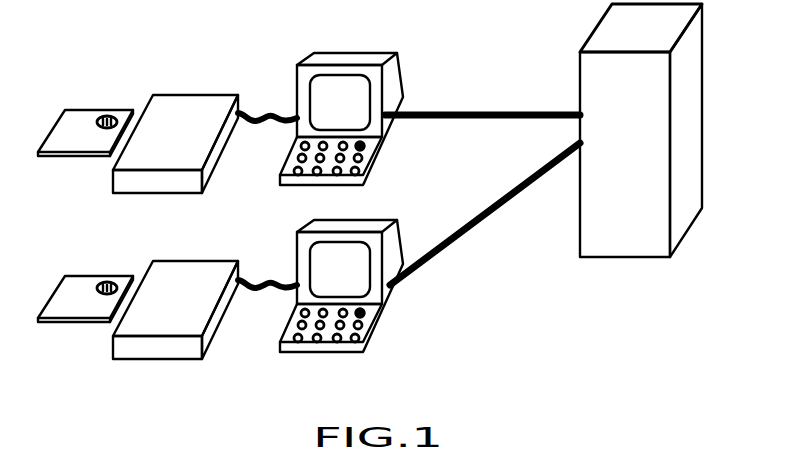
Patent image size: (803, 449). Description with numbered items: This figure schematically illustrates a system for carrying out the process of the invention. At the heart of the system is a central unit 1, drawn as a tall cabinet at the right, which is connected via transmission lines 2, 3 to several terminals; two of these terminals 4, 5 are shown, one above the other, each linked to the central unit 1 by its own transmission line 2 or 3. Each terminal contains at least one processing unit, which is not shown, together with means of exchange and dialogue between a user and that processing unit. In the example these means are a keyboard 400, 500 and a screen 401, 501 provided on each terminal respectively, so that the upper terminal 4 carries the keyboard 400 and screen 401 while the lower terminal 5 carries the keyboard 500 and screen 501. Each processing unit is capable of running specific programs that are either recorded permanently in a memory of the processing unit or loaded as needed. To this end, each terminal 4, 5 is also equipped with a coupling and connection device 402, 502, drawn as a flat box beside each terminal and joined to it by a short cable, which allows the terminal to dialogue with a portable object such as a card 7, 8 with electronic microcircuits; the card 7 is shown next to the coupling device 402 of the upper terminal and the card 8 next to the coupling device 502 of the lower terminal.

The central unit 1 is at (687, 85).
The transmission line 2 is at (512, 110).
The transmission line 3 is at (478, 213).
The terminal 4 is at (382, 96).
The terminal 5 is at (388, 263).
The card 7 is at (72, 123).
The card 8 is at (68, 288).
The keyboard 400 is at (362, 147).
The screen 401 is at (353, 83).
The coupling and connection device 402 is at (195, 105).
The keyboard 500 is at (358, 315).
The screen 501 is at (353, 252).
The coupling and connection device 502 is at (188, 268).